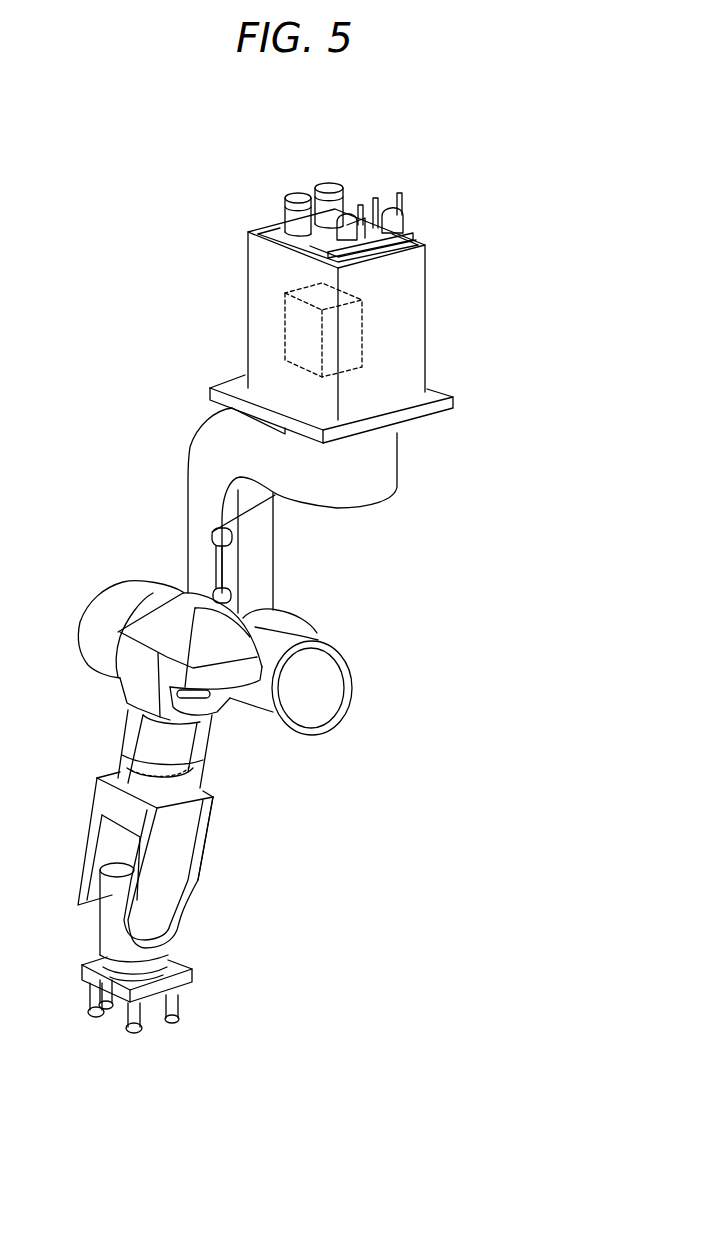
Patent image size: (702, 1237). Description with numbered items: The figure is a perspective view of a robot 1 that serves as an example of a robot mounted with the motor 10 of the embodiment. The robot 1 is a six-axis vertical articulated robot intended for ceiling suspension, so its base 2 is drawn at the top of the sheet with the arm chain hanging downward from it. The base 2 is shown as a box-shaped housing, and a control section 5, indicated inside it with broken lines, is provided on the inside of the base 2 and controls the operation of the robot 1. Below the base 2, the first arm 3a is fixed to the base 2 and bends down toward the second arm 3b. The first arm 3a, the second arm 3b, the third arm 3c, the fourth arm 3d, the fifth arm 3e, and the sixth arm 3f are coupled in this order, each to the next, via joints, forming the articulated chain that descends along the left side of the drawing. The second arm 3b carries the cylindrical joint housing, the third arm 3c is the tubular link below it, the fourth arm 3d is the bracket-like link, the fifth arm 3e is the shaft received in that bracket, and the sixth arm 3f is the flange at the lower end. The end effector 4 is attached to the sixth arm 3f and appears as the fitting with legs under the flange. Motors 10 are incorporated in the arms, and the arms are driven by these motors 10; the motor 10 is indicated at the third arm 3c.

The robot 1 is at (507, 173).
The base 2 is at (427, 312).
The control section 5 is at (283, 326).
The first arm 3a is at (208, 442).
The second arm 3b is at (255, 703).
The third arm 3c is at (132, 722).
The motor 10 is at (205, 753).
The fourth arm 3d is at (197, 828).
The fifth arm 3e is at (110, 895).
The sixth arm 3f is at (193, 988).
The end effector 4 is at (180, 1015).